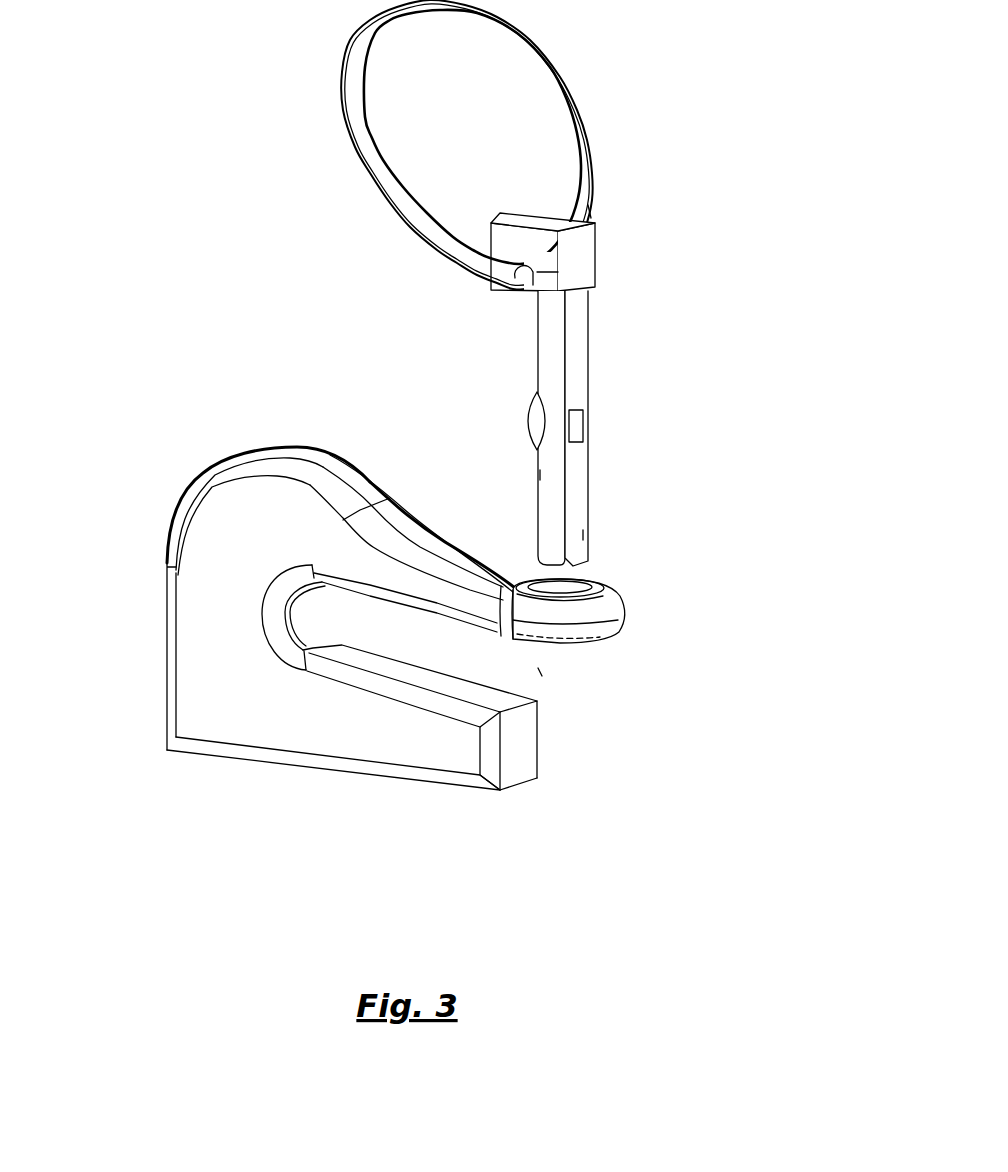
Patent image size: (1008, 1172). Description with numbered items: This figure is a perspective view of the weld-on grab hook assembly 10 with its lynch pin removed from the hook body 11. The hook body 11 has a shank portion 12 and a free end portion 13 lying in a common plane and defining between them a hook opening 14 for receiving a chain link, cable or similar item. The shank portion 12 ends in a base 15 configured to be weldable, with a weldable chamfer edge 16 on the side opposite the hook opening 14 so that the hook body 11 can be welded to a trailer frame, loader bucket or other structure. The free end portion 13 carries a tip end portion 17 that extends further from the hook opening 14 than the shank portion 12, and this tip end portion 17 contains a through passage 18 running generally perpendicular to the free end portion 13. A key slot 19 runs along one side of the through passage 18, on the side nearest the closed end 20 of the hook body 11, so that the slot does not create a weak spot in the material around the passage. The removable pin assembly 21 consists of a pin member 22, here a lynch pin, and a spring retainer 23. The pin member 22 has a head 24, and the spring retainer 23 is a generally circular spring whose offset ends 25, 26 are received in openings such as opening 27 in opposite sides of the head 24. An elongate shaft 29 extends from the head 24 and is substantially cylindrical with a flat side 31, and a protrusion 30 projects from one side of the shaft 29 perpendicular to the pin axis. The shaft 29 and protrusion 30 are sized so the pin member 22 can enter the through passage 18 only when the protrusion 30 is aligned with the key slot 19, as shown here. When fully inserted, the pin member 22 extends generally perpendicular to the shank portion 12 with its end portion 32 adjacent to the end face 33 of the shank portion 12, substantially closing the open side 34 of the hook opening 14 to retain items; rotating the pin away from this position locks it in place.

The hook assembly 10 is at (272, 352).
The hook body 11 is at (225, 470).
The shank portion 12 is at (292, 768).
The free end portion 13 is at (390, 520).
The hook opening 14 is at (434, 648).
The base 15 is at (440, 748).
The weldable chamfer edge 16 is at (222, 750).
The tip end portion 17 is at (603, 586).
The through passage 18 is at (606, 585).
The key slot 19 is at (532, 580).
The closed end 20 is at (230, 595).
The removable pin assembly 21 is at (608, 216).
The pin member 22 is at (586, 428).
The spring retainer 23 is at (566, 113).
The head 24 is at (520, 217).
The offset end 25 is at (508, 274).
The offset end 26 is at (586, 207).
The opening 27 is at (560, 272).
The elongate shaft 29 is at (545, 475).
The protrusion 30 is at (522, 411).
The flat side 31 is at (580, 345).
The end portion 32 is at (578, 535).
The end face 33 is at (518, 762).
The open side 34 is at (540, 673).